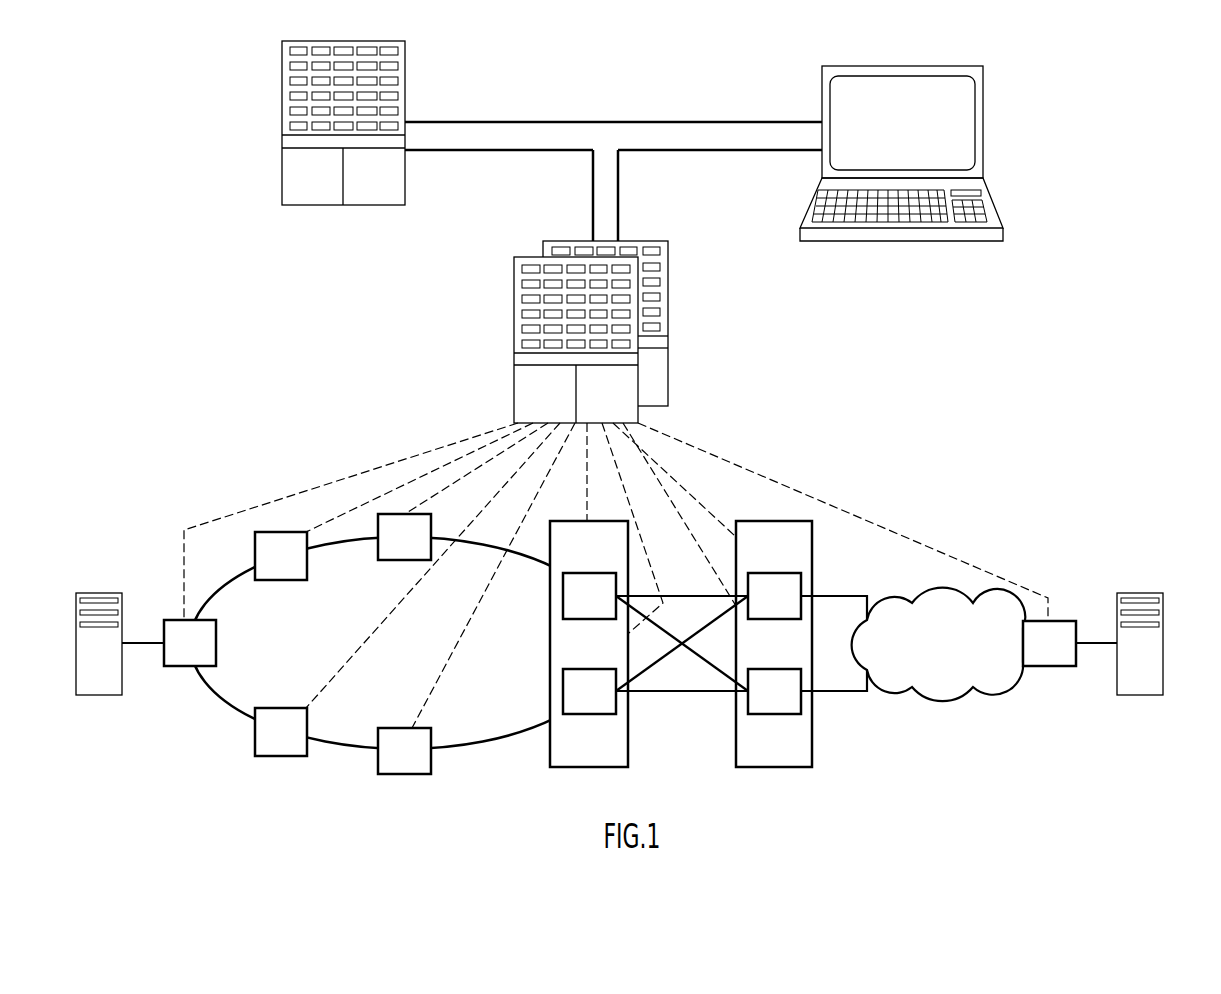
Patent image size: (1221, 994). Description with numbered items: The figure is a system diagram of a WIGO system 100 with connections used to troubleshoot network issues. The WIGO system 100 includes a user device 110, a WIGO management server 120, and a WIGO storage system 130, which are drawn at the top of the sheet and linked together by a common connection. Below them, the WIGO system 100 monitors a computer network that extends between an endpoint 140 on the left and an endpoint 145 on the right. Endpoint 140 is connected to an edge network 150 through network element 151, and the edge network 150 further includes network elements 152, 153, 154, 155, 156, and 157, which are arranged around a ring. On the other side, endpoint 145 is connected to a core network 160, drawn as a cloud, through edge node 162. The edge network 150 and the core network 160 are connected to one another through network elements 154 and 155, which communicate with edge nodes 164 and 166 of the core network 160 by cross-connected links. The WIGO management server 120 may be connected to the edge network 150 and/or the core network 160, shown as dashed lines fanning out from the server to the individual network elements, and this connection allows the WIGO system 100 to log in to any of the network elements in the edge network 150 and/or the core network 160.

The WIGO system 100 is at (145, 88).
The user device 110 is at (983, 128).
The WIGO management server 120 is at (668, 318).
The WIGO storage system 130 is at (405, 98).
The endpoint 140 is at (101, 695).
The endpoint 145 is at (1163, 621).
The edge network 150 is at (465, 748).
The network element 151 is at (177, 655).
The network element 152 is at (268, 568).
The network element 153 is at (391, 549).
The network element 154 is at (576, 608).
The network element 155 is at (576, 703).
The network element 156 is at (391, 763).
The network element 157 is at (268, 744).
The core network 160 is at (929, 655).
The edge node 162 is at (1036, 655).
The edge node 164 is at (761, 608).
The edge node 166 is at (761, 703).